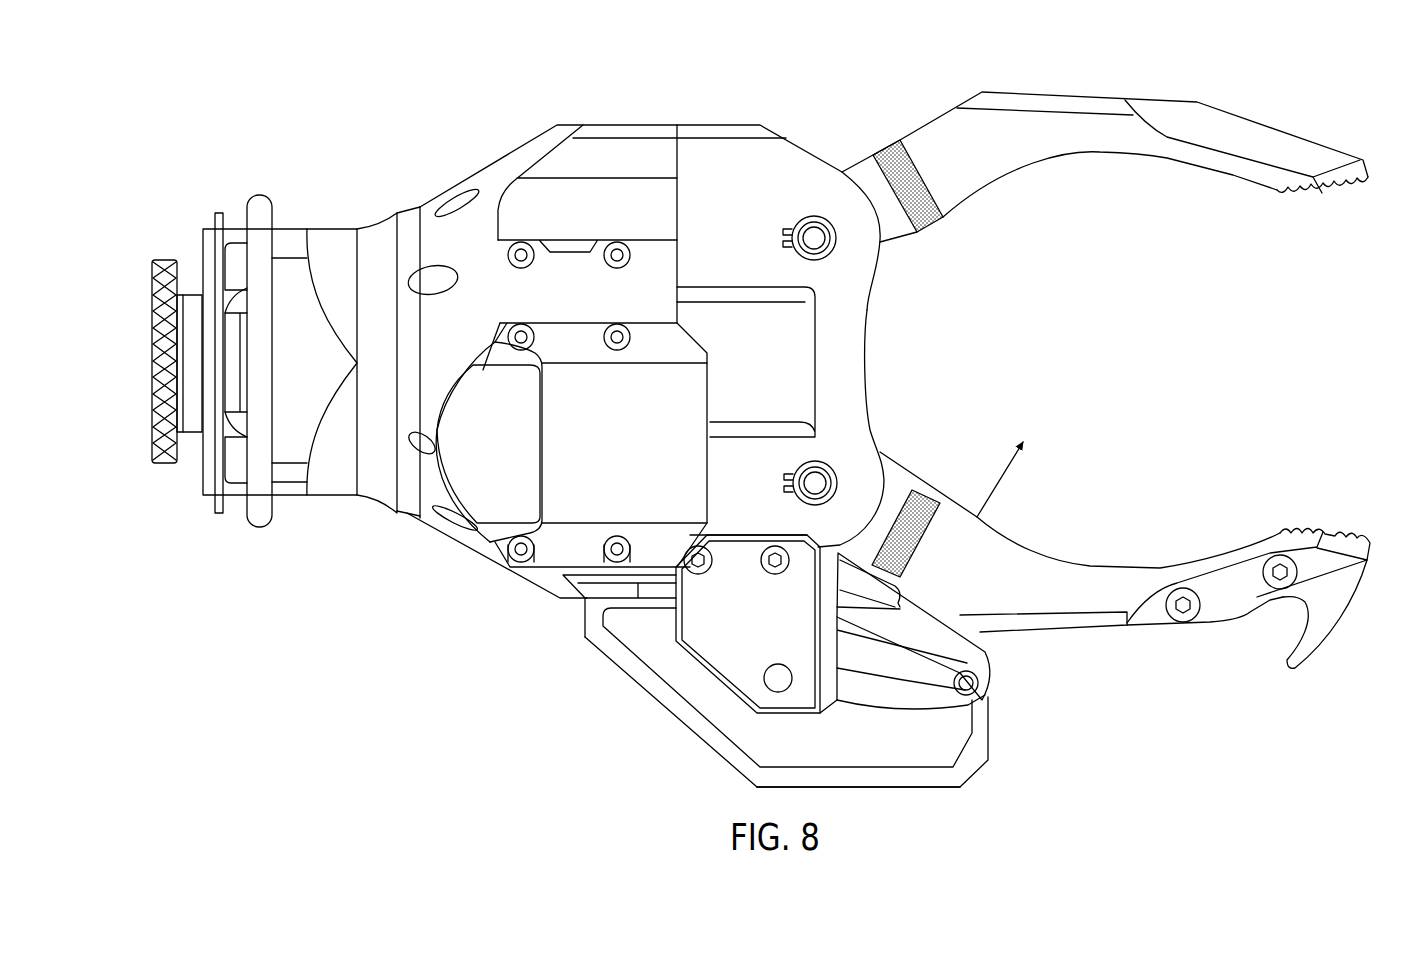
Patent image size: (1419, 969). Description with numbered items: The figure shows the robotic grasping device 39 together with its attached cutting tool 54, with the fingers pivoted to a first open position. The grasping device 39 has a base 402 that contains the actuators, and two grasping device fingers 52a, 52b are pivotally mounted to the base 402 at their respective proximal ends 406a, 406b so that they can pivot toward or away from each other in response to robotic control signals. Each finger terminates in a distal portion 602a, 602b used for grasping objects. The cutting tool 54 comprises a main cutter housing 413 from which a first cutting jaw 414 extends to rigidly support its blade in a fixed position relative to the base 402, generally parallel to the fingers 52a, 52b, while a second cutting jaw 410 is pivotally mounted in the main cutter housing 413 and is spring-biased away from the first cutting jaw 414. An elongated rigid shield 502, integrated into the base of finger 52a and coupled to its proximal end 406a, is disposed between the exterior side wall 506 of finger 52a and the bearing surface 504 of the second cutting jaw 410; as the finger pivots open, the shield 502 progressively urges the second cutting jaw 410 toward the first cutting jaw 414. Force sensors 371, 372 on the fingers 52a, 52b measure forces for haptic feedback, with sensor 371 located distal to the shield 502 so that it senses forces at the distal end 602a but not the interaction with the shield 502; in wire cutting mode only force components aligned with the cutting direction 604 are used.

The robotic grasping device 39 is at (352, 566).
The base 402 is at (500, 155).
The proximal end 406a is at (888, 452).
The proximal end 406b is at (900, 238).
The grasping device finger 52a is at (1100, 553).
The grasping device finger 52b is at (1090, 84).
The distal end of the finger 602a is at (1230, 545).
The distal portion of the finger 602b is at (1243, 178).
The force sensor 371 is at (921, 500).
The force sensor 372 is at (890, 152).
The cutting direction 604 is at (1010, 466).
The bearing surface 504 is at (982, 646).
The exterior side wall 506 is at (952, 608).
The second cutting jaw 410 is at (992, 662).
The elongated rigid shield 502 is at (893, 578).
The cutting tool 54 is at (655, 760).
The main cutter housing 413 is at (557, 663).
The first cutting jaw 414 is at (865, 790).